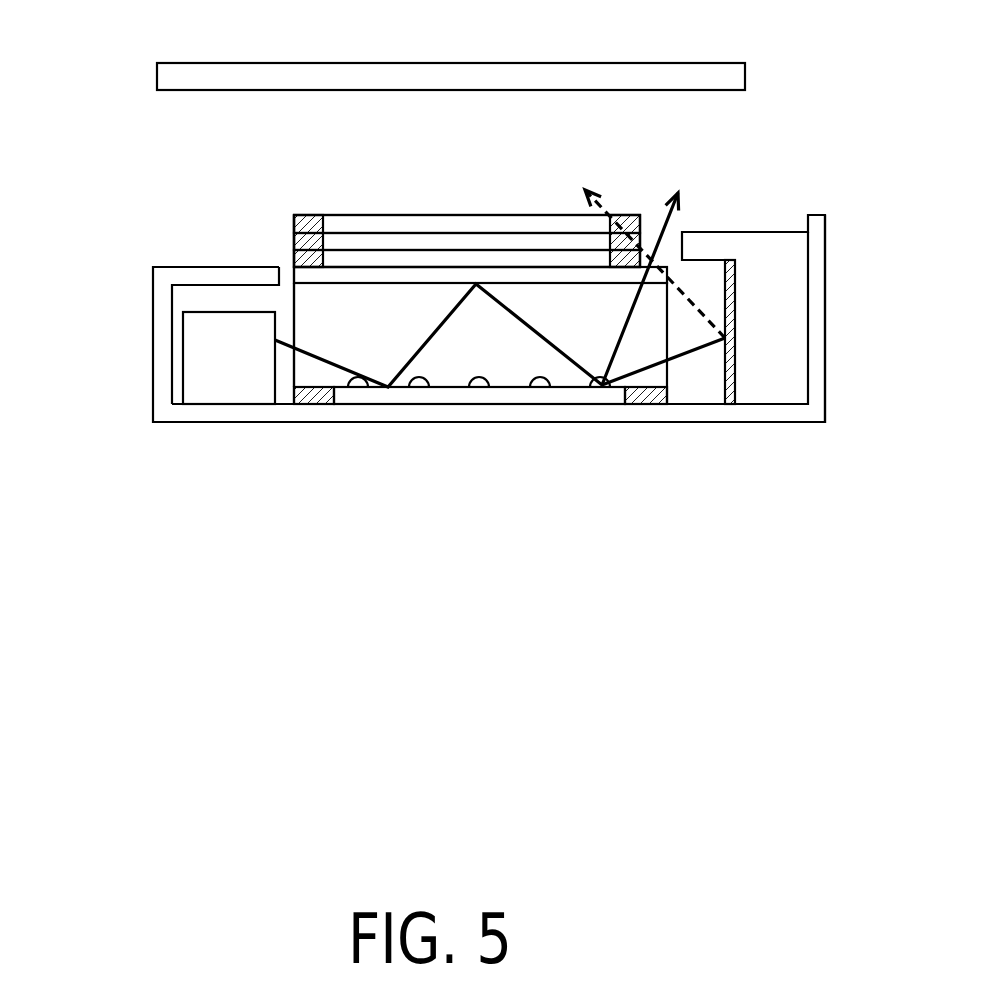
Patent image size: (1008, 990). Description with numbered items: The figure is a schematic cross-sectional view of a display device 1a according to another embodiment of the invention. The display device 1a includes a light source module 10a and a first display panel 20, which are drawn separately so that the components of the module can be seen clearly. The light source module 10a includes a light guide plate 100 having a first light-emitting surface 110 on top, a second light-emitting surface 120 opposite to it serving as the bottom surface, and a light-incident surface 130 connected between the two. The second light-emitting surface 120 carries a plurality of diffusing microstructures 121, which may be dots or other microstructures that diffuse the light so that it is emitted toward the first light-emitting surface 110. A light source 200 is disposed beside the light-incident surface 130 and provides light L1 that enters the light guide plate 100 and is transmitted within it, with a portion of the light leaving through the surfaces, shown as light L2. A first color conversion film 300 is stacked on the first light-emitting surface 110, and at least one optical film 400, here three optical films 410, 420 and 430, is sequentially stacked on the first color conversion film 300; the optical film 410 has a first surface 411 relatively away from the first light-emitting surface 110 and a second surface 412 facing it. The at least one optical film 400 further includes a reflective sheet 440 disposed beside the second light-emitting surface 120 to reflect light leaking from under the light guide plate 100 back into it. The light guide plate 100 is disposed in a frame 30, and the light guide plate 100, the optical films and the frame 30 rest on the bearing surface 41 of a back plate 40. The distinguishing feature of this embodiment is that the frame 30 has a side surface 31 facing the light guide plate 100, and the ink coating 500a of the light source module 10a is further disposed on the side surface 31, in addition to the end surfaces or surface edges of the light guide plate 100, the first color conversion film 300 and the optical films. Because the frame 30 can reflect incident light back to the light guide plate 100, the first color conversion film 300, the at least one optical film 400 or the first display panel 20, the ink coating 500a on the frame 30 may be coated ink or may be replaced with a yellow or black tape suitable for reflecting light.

The display device 1a is at (77, 35).
The light source module 10a is at (158, 185).
The first display panel 20 is at (737, 78).
The frame 30 is at (778, 316).
The side surface 31 is at (737, 360).
The back plate 40 is at (162, 340).
The bearing surface 41 is at (703, 404).
The light guide plate 100 is at (452, 372).
The first light-emitting surface 110 is at (322, 285).
The second light-emitting surface 120 is at (572, 382).
The diffusing microstructures 121 is at (601, 388).
The light-incident surface 130 is at (294, 370).
The light source 200 is at (228, 392).
The first color conversion film 300 is at (312, 277).
The optical film 400 is at (512, 143).
The optical film 410 is at (340, 262).
The optical film 420 is at (388, 240).
The optical film 430 is at (438, 225).
The reflective sheet 440 is at (510, 395).
The first surface 411 is at (525, 212).
The second surface 412 is at (565, 232).
The ink coating 500a is at (293, 222).
The light L1 is at (673, 220).
The reflected light beam L2 is at (603, 203).